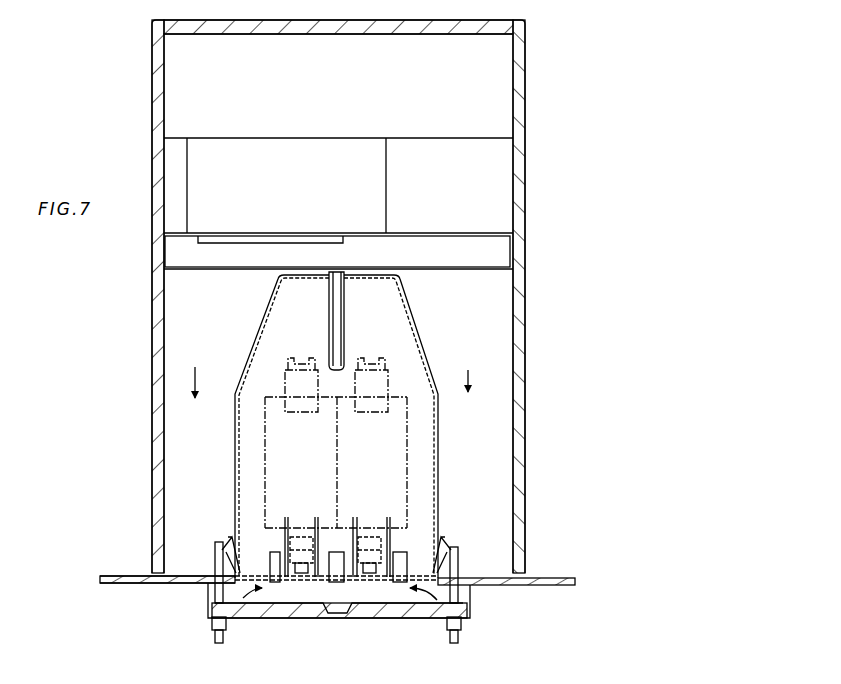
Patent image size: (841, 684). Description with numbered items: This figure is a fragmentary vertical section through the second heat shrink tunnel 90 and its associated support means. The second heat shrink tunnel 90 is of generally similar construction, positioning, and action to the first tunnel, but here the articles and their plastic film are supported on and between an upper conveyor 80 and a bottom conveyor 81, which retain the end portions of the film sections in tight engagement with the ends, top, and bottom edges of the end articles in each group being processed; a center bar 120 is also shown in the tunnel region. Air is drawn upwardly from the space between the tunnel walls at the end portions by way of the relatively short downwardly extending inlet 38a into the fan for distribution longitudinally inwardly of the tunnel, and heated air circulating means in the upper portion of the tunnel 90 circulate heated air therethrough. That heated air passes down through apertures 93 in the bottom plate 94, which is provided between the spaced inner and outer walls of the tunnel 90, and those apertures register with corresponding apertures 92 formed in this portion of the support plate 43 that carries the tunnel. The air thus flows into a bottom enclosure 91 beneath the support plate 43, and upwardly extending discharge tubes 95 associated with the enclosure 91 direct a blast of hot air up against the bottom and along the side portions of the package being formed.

The second heat shrink tunnel 90 is at (528, 315).
The downwardly extending inlet 38a is at (198, 243).
The center bar 120 is at (347, 314).
The upper conveyor 80 is at (284, 377).
The bottom conveyor 81 is at (352, 527).
The discharge tubes 95 is at (274, 553).
The bottom plate 94 is at (172, 576).
The support plate 43 is at (128, 584).
The apertures 92 is at (210, 592).
The bottom enclosure 91 is at (284, 618).
The apertures 93 is at (220, 550).